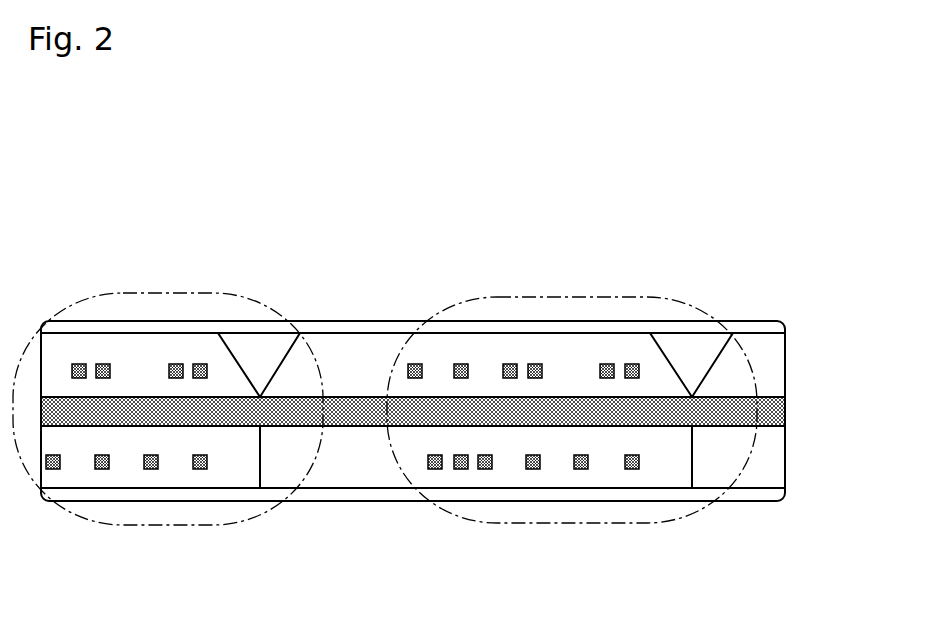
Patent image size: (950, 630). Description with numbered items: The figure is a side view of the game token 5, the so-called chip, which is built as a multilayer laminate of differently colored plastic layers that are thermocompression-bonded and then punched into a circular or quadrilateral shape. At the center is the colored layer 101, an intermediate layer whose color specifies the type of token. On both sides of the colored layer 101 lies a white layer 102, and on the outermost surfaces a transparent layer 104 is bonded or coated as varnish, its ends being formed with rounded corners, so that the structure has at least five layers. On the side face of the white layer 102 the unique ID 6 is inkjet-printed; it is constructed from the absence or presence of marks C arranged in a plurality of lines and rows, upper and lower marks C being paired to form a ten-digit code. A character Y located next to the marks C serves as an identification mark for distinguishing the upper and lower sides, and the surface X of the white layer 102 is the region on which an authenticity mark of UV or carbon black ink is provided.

The game token 5 is at (400, 333).
The ID 6 is at (180, 294).
The colored layer 101 is at (772, 412).
The white layer 102 is at (772, 362).
The transparent layer 104 is at (353, 321).
The mark C is at (79, 364).
The surface of the white layer X is at (317, 333).
The identification mark Y is at (284, 358).